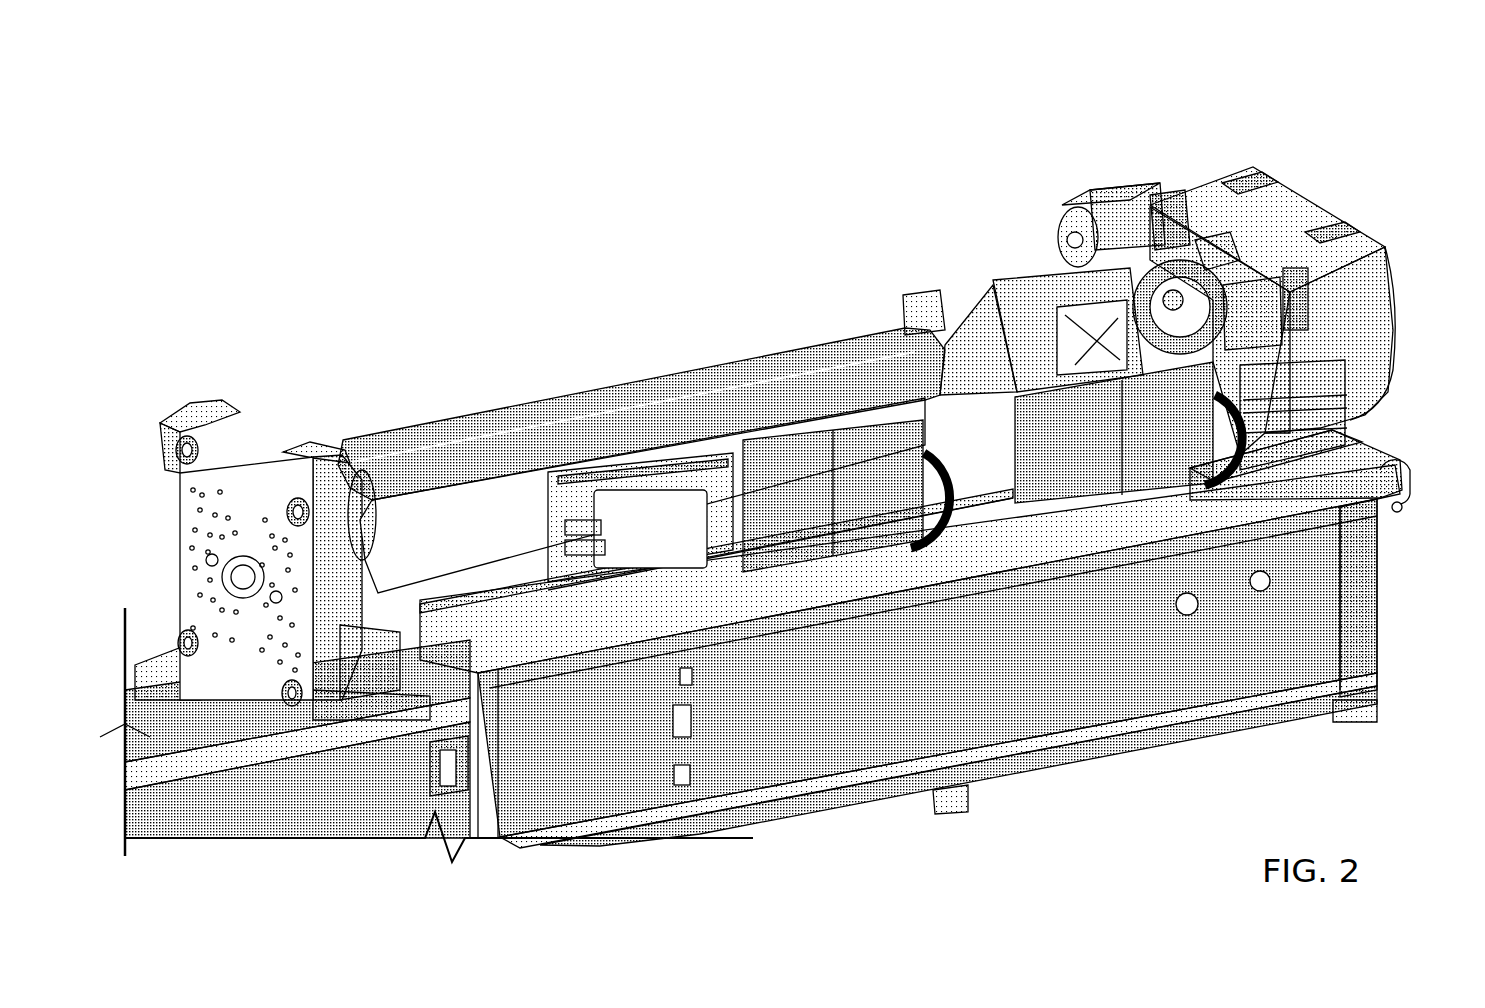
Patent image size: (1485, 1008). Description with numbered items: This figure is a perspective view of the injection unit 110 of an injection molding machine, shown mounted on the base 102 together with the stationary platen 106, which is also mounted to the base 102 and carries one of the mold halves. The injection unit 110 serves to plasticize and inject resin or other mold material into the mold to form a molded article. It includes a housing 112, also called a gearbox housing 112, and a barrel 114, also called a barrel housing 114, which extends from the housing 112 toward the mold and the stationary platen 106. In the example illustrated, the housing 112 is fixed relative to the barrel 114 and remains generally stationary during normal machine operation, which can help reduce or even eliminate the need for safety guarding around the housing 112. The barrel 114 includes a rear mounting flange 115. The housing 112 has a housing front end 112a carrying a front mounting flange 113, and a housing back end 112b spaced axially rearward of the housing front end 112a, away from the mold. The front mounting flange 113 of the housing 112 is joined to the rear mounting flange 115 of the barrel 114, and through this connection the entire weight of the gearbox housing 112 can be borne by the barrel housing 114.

The base 102 is at (795, 768).
The stationary platen 106 is at (265, 462).
The injection unit 110 is at (930, 105).
The housing 112 is at (1318, 165).
The housing front end 112a is at (1222, 388).
The housing back end 112b is at (1412, 312).
The front mounting flange 113 is at (1210, 243).
The barrel 114 is at (885, 285).
The rear mounting flange 115 is at (1197, 243).